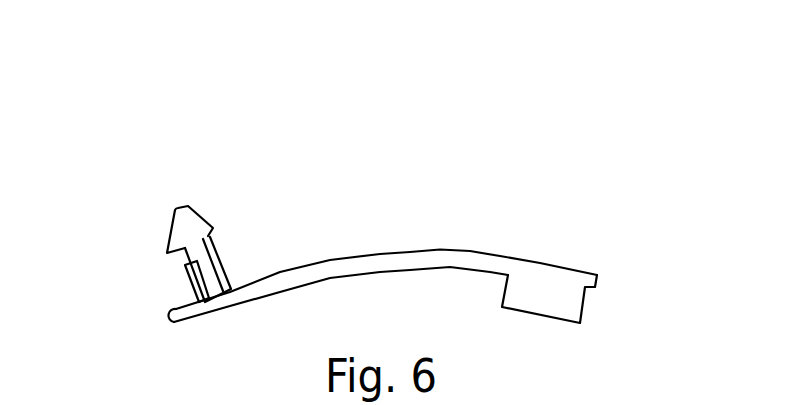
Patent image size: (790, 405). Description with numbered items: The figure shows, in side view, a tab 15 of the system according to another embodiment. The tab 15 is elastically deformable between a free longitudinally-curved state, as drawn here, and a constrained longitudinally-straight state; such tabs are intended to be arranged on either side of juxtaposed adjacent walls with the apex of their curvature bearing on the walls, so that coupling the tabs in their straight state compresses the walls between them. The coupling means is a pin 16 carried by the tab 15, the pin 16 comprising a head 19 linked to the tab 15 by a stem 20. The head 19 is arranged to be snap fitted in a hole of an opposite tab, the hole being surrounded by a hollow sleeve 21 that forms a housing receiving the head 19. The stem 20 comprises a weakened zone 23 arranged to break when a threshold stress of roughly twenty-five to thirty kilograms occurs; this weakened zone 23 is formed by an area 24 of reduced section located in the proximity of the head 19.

The tab 15 is at (459, 204).
The pin 16 is at (142, 206).
The head 19 is at (176, 214).
The stem 20 is at (187, 283).
The hollow sleeve 21 is at (569, 297).
The weakened zone 23 is at (257, 244).
The area of reduced section 24 is at (205, 249).